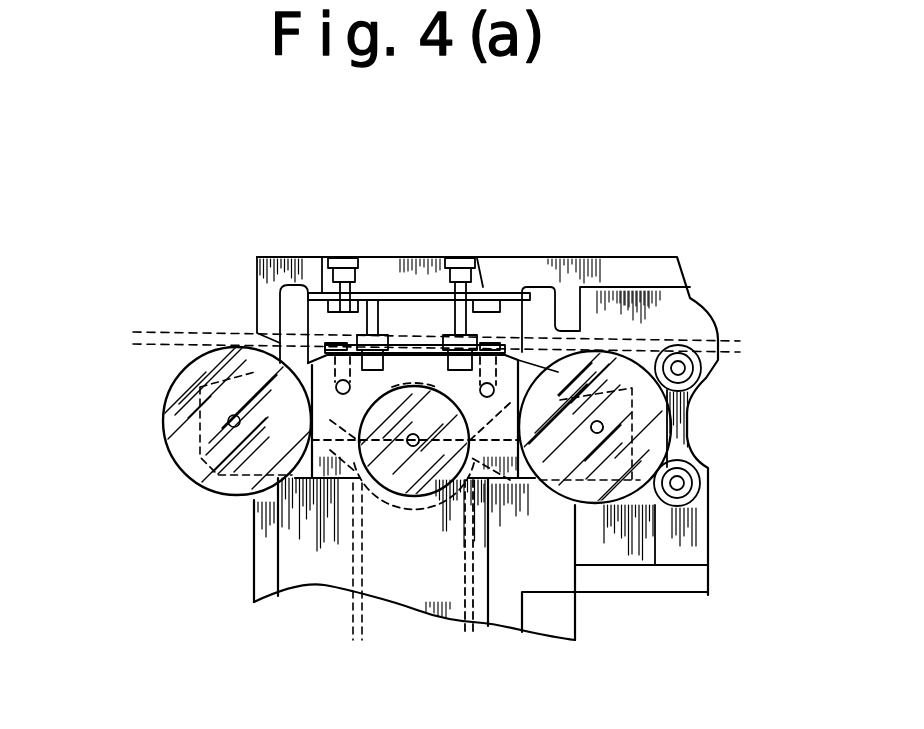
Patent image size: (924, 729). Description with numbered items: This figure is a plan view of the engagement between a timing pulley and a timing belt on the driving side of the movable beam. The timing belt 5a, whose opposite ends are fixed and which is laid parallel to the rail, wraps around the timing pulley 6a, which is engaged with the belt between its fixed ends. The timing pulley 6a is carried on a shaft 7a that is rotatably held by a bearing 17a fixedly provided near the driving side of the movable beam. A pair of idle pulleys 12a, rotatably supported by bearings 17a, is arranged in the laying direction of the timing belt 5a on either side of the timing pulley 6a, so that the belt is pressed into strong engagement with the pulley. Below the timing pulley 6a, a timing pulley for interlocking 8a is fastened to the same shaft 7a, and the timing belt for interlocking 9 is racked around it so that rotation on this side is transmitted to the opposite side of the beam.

The timing belt 5a is at (190, 345).
The shaft 7a is at (415, 440).
The bearing 17a is at (592, 378).
The idle pulley 12a is at (187, 450).
The timing pulley 6a is at (424, 555).
The timing pulley for interlocking 8a is at (415, 483).
The timing belt for interlocking 9 is at (360, 548).